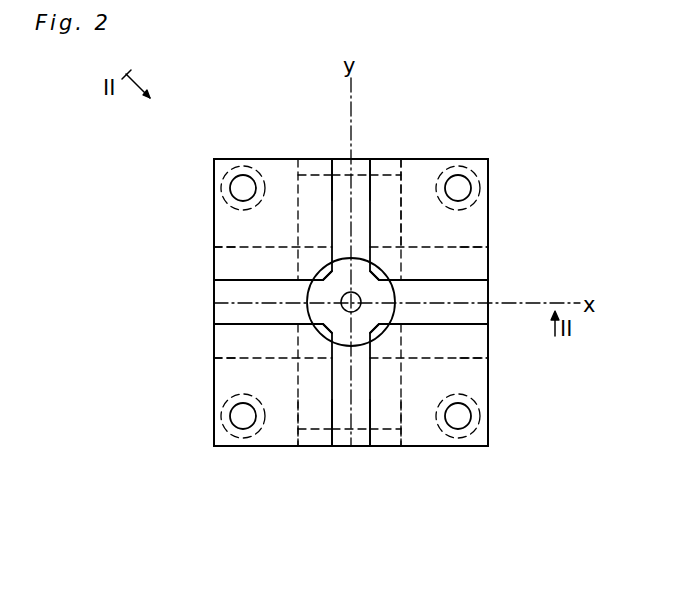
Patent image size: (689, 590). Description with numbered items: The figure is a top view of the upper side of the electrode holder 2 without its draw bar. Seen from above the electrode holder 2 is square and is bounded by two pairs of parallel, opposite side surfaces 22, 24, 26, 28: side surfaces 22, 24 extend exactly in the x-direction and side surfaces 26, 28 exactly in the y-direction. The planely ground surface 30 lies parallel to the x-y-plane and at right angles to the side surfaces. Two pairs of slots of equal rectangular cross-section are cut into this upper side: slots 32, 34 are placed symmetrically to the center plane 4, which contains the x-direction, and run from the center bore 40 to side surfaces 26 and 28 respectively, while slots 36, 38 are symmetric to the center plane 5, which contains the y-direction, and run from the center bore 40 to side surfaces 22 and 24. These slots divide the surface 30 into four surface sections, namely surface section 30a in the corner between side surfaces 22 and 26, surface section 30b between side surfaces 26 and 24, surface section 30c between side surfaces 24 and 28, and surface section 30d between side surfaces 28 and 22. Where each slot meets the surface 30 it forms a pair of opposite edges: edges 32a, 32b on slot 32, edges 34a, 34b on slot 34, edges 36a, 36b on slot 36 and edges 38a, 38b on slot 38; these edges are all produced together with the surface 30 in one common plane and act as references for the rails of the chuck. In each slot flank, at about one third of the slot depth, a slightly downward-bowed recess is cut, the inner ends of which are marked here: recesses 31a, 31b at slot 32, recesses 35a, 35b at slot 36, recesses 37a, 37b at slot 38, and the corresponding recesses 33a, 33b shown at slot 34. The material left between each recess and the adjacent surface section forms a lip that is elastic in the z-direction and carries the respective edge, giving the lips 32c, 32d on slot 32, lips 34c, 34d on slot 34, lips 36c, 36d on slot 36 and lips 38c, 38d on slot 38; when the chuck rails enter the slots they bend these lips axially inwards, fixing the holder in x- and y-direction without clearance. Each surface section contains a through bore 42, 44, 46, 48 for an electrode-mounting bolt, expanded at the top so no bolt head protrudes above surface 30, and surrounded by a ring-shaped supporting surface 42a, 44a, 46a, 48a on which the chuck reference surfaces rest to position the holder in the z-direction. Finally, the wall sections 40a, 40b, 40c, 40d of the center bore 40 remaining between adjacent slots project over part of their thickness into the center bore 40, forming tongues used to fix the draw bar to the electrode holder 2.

The electrode holder 2 is at (470, 153).
The center plane 4 is at (563, 303).
The center plane 5 is at (351, 91).
The side surface 22 is at (450, 160).
The side surface 24 is at (420, 425).
The side surface 26 is at (490, 197).
The side surface 28 is at (213, 187).
The planely ground surface 30 is at (423, 178).
The surface section 30a is at (478, 218).
The surface section 30b is at (480, 388).
The surface section 30c is at (232, 380).
The surface section 30d is at (272, 175).
The recess 31a is at (468, 246).
The recess 31b is at (470, 360).
The slot 32 is at (490, 286).
The edge 32a is at (484, 275).
The edge 32b is at (480, 325).
The lip 32c is at (490, 258).
The lip 32d is at (480, 345).
The boundary line 33a is at (225, 247).
The boundary line 33b is at (225, 358).
The slot 34 is at (222, 320).
The edge 34a is at (215, 274).
The edge 34b is at (222, 325).
The lip 34c is at (215, 268).
The lip 34d is at (213, 347).
The recess 35a is at (411, 175).
The recess 35b is at (298, 178).
The slot 36 is at (358, 172).
The edge 36a is at (377, 162).
The edge 36b is at (333, 178).
The lip 36c is at (388, 177).
The lip 36d is at (303, 183).
The recess 37a is at (400, 447).
The recess 37b is at (293, 418).
The slot 38 is at (355, 447).
The edge 38a is at (370, 432).
The edge 38b is at (333, 430).
The lip 38c is at (390, 410).
The lip 38d is at (313, 418).
The center bore 40 is at (338, 340).
The wall section 40a is at (385, 270).
The wall section 40b is at (380, 337).
The wall section 40c is at (326, 330).
The wall section 40d is at (318, 270).
The through bore 42 is at (460, 182).
The ring-shaped supporting surface 42a is at (490, 168).
The through bore 44 is at (238, 176).
The ring-shaped supporting surface 44a is at (222, 172).
The through bore 46 is at (233, 413).
The ring-shaped supporting surface 46a is at (226, 424).
The through bore 48 is at (472, 420).
The ring-shaped supporting surface 48a is at (478, 438).